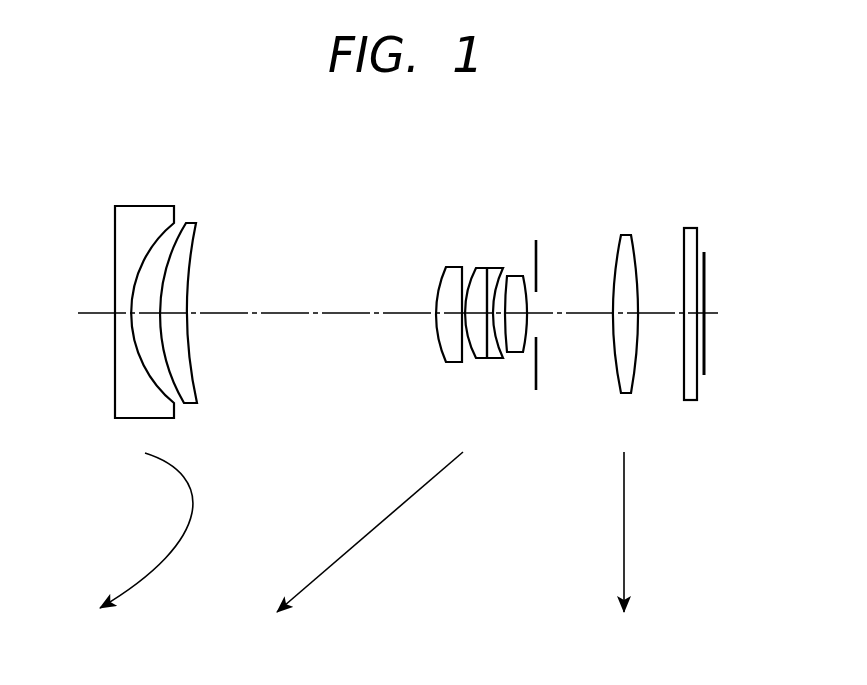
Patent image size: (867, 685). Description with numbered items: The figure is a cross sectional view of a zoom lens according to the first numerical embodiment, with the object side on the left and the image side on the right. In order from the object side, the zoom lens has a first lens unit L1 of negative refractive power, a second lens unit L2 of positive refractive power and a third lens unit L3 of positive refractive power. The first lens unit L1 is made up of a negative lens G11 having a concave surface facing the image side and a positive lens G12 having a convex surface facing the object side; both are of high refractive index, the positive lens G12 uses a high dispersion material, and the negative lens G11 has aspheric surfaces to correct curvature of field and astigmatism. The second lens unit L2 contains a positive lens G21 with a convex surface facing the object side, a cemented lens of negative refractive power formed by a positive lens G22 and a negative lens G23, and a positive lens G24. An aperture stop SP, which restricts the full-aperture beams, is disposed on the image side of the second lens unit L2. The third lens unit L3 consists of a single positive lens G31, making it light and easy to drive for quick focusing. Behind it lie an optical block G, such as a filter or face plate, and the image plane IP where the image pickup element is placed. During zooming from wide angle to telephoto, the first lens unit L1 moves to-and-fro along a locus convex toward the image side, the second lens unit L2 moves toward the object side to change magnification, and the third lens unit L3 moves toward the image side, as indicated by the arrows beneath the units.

The first lens unit L1 is at (203, 158).
The negative lens G11 is at (123, 245).
The positive lens G12 is at (186, 248).
The second lens unit L2 is at (519, 158).
The positive lens G21 is at (445, 298).
The positive lens G22 is at (477, 267).
The negative lens G23 is at (496, 273).
The positive lens G24 is at (517, 283).
The aperture stop SP is at (537, 255).
The third lens unit L3 is at (638, 158).
The positive lens G31 is at (619, 263).
The optical block G is at (703, 158).
The image plane IP is at (705, 267).